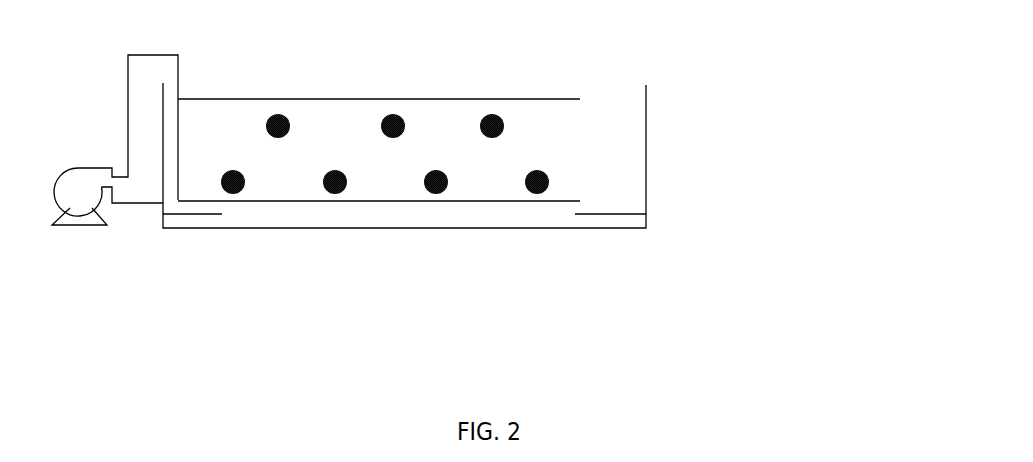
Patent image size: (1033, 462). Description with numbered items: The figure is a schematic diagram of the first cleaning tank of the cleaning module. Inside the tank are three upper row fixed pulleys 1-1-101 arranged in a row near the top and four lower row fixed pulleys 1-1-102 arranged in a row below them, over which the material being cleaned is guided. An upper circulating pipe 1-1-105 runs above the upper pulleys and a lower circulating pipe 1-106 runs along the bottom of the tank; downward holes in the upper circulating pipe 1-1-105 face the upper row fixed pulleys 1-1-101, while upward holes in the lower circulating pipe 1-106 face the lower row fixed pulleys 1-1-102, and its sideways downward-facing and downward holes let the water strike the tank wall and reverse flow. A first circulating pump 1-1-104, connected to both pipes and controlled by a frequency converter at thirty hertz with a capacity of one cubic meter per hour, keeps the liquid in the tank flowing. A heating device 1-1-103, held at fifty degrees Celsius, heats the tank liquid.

The upper row fixed pulley 1-1-101 is at (504, 125).
The lower row fixed pulley 1-1-102 is at (549, 179).
The heating device 1-1-103 is at (637, 222).
The first circulating pump 1-1-104 is at (83, 228).
The upper circulating pipe 1-1-105 is at (403, 99).
The lower circulating pipe 1-106 is at (438, 201).